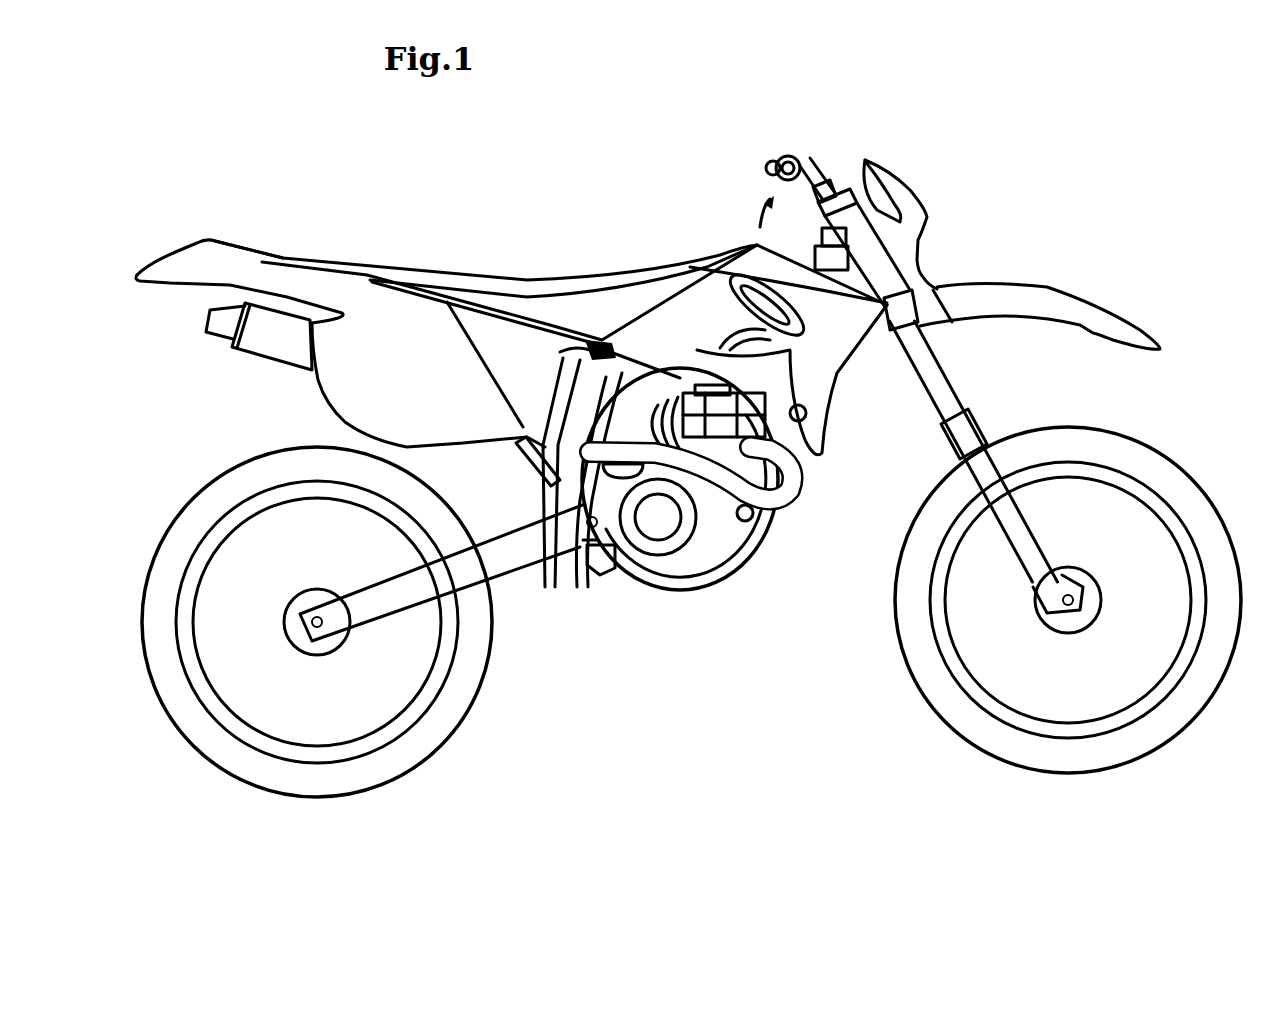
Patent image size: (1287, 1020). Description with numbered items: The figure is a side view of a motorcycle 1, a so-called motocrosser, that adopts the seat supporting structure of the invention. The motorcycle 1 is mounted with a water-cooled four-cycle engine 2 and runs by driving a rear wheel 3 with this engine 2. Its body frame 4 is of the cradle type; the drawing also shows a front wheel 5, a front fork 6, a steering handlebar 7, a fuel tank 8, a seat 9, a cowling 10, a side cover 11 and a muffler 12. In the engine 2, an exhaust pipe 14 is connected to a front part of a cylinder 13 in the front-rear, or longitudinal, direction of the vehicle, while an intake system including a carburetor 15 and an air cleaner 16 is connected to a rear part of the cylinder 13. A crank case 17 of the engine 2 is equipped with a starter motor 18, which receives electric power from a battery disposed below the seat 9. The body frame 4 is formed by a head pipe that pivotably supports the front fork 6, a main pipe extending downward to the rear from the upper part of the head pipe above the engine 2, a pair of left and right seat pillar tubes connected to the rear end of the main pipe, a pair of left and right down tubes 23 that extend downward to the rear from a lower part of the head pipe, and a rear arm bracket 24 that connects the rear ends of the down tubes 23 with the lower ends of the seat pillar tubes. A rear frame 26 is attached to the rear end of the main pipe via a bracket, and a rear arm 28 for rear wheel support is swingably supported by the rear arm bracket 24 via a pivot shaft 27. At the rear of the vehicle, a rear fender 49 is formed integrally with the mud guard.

The motorcycle 1 is at (972, 193).
The engine 2 is at (671, 448).
The rear wheel 3 is at (317, 799).
The body frame 4 is at (765, 570).
The front wheel 5 is at (1068, 774).
The front fork 6 is at (957, 387).
The steering handlebar 7 is at (803, 167).
The fuel tank 8 is at (728, 263).
The seat 9 is at (570, 278).
The cowling 10 is at (835, 352).
The side cover 11 is at (403, 307).
The muffler 12 is at (282, 337).
The cylinder 13 is at (704, 392).
The exhaust pipe 14 is at (792, 480).
The carburetor 15 is at (650, 398).
The air cleaner 16 is at (582, 380).
The crank case 17 is at (672, 565).
The starter motor 18 is at (754, 515).
The down tubes 23 is at (767, 550).
The rear arm bracket 24 is at (560, 512).
The rear frame 26 is at (530, 467).
The pivot shaft 27 is at (575, 548).
The rear arm 28 is at (510, 592).
The rear fender 49 is at (321, 264).